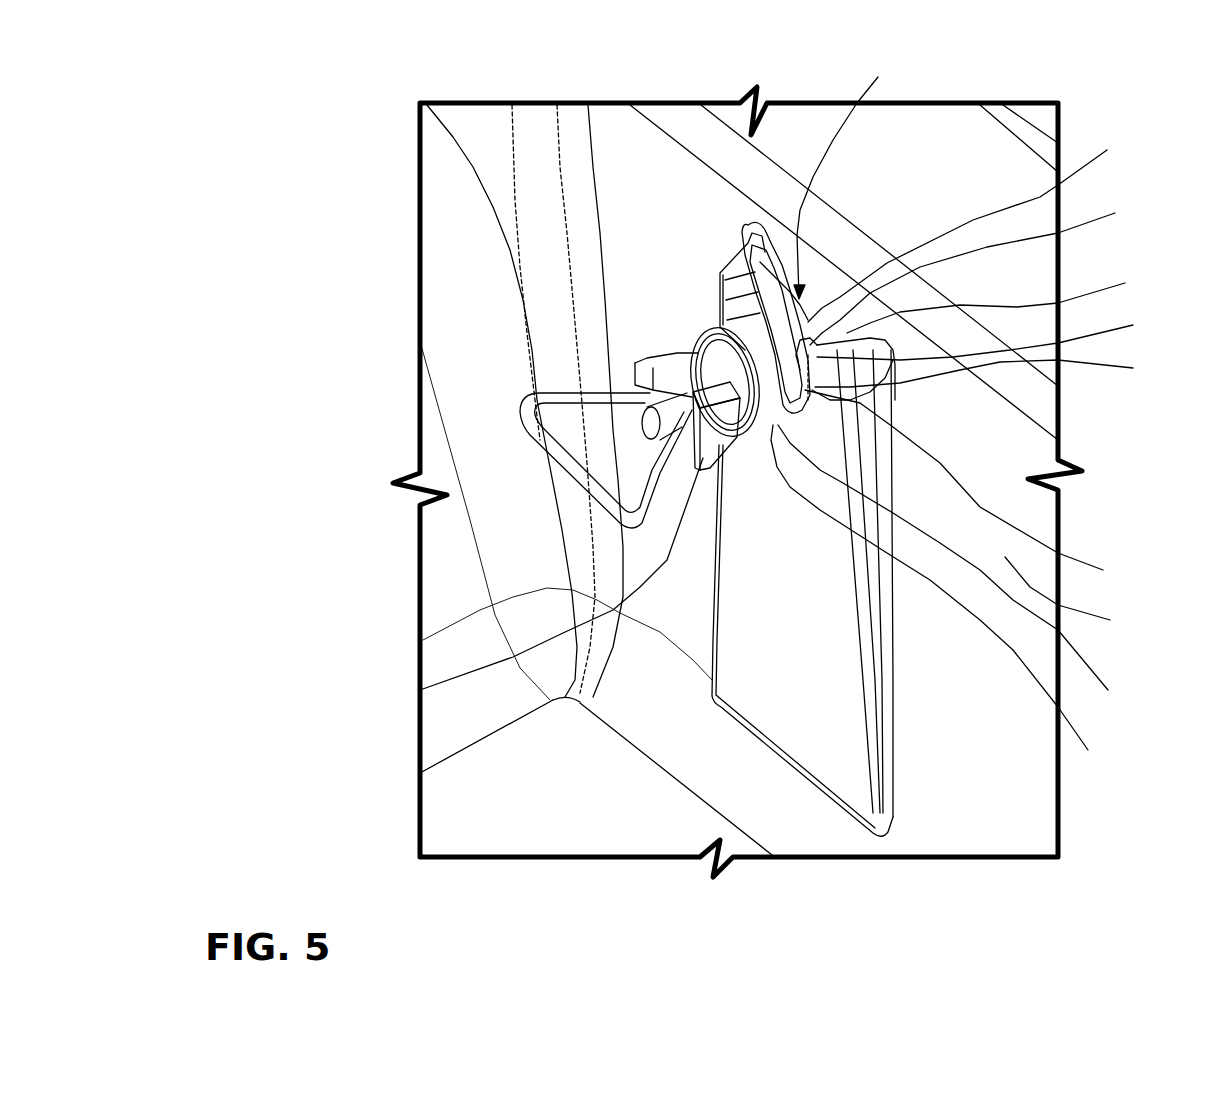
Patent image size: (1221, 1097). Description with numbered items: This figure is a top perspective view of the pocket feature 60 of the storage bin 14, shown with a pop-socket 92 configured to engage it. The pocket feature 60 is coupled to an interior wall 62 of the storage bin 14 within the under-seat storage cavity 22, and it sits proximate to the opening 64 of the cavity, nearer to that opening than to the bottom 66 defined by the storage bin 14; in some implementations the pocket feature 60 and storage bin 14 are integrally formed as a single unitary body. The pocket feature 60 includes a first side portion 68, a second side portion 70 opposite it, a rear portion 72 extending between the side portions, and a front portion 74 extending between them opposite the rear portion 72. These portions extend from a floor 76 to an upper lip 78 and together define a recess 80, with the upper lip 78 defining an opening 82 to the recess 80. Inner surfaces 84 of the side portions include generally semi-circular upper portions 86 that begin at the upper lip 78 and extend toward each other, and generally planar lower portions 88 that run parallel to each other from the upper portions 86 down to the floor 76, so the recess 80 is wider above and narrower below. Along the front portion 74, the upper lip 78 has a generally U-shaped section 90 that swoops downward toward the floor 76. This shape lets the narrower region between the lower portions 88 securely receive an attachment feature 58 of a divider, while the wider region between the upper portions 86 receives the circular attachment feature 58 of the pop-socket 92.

The storage bin 14 is at (977, 425).
The under-seat storage cavity 22 is at (486, 138).
The attachment feature 58 is at (720, 340).
The pocket feature 60 is at (792, 318).
The interior wall 62 is at (784, 618).
The opening 64 is at (693, 135).
The bottom 66 is at (523, 810).
The first side portion 68 is at (757, 269).
The second side portion 70 is at (990, 371).
The rear portion 72 is at (970, 222).
The front portion 74 is at (720, 327).
The floor 76 is at (912, 593).
The upper lip 78 is at (987, 335).
The recess 80 is at (850, 305).
The opening 82 is at (976, 273).
The inner surfaces 84 is at (833, 255).
The upper portions 86 is at (979, 205).
The lower portions 88 is at (420, 691).
The U-shaped section 90 is at (959, 572).
The pop-socket 92 is at (663, 360).